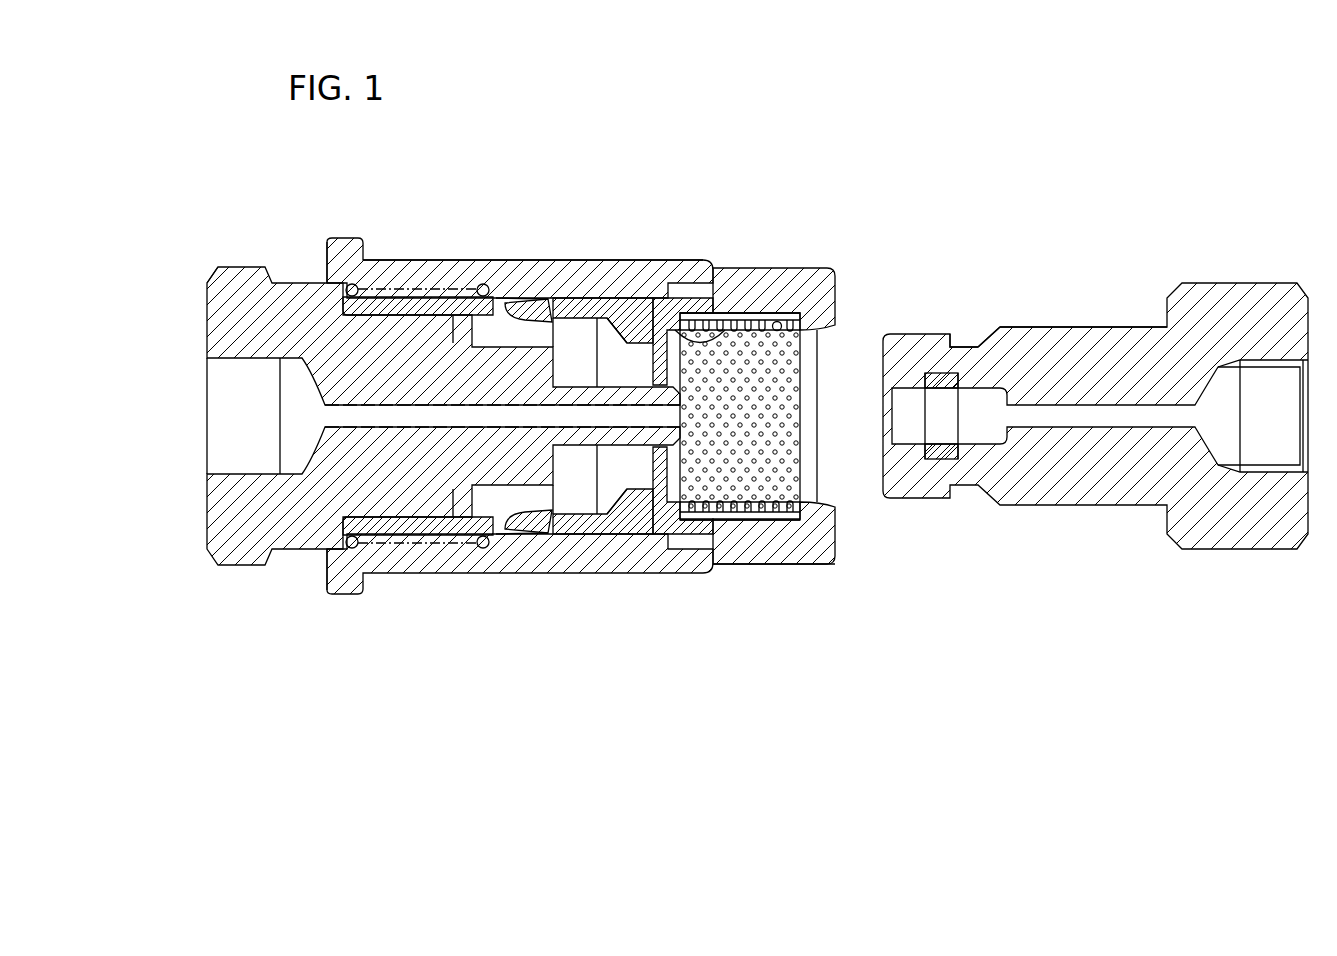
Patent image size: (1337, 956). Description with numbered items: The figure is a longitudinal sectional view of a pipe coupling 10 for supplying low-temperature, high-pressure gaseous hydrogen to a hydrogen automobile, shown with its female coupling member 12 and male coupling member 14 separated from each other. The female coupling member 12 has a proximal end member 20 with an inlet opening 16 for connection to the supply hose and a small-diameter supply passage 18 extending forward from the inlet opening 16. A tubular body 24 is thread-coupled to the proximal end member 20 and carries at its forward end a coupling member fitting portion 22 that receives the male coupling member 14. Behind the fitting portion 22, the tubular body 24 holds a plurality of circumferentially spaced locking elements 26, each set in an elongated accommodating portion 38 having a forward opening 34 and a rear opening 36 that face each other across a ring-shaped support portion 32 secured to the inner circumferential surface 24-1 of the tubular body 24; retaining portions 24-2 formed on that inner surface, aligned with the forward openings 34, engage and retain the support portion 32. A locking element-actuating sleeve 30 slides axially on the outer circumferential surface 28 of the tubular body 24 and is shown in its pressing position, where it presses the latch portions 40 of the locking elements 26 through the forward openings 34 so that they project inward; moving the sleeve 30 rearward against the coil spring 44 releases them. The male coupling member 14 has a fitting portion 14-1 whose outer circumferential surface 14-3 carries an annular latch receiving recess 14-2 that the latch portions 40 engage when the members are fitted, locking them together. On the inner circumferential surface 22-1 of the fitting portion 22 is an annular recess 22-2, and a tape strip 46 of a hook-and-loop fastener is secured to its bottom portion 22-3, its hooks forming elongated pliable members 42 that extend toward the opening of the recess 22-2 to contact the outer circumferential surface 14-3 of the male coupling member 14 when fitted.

The pipe coupling 10 is at (867, 172).
The female coupling member 12 is at (550, 173).
The male coupling member 14 is at (1090, 182).
The fitting portion 14-1 is at (1040, 326).
The annular latch receiving recess 14-2 is at (963, 345).
The outer circumferential surface 14-3 is at (1040, 326).
The inlet opening 16 is at (228, 400).
The small-diameter supply passage 18 is at (346, 408).
The proximal end member 20 is at (243, 262).
The coupling member fitting portion 22 is at (727, 285).
The inner circumferential surface 22-1 is at (735, 318).
The annular recess 22-2 is at (773, 363).
The bottom portion 22-3 is at (778, 310).
The tubular body 24 is at (433, 286).
The inner circumferential surface 24-1 is at (470, 300).
The retaining portions 24-2 is at (590, 320).
The locking elements 26 is at (566, 308).
The outer circumferential surface 28 is at (380, 297).
The locking element-actuating sleeve 30 is at (660, 258).
The support portion 32 is at (580, 320).
The forward opening 34 is at (583, 487).
The rear opening 36 is at (516, 504).
The elongated accommodating portion 38 is at (530, 496).
The latch portions 40 is at (655, 480).
The elongated pliable members 42 is at (777, 362).
The coil spring 44 is at (478, 290).
The tape strip 46 is at (765, 529).